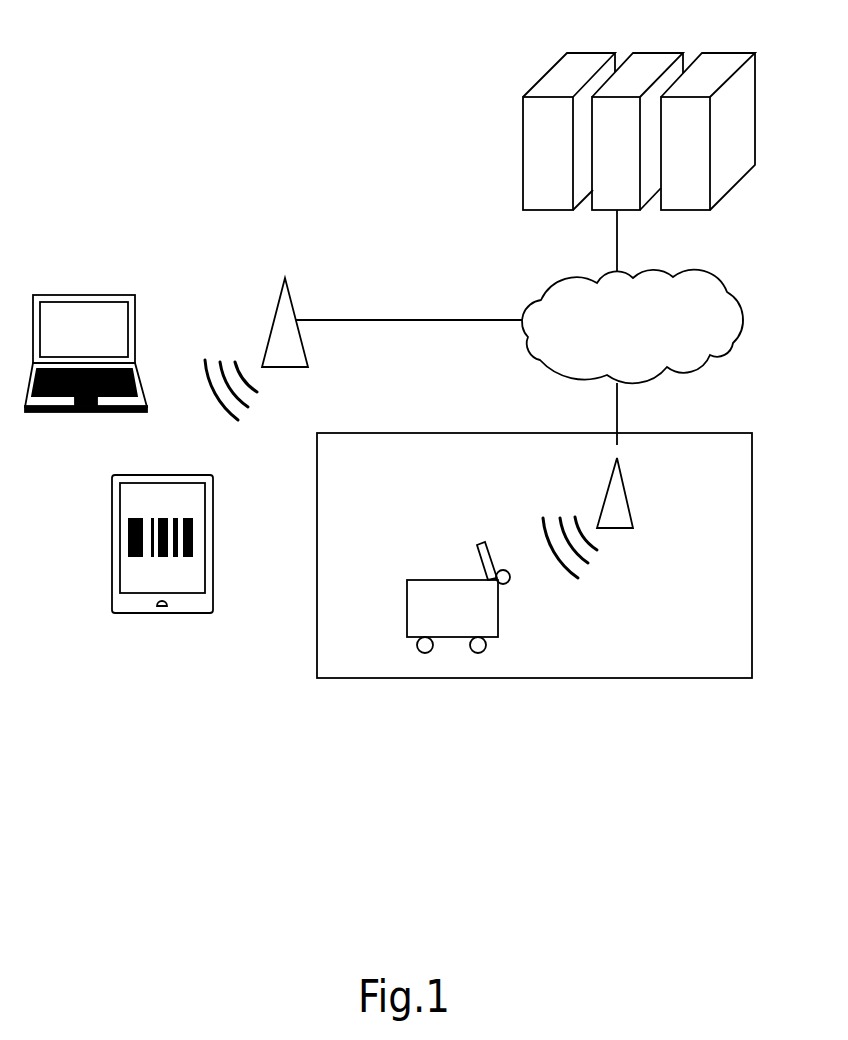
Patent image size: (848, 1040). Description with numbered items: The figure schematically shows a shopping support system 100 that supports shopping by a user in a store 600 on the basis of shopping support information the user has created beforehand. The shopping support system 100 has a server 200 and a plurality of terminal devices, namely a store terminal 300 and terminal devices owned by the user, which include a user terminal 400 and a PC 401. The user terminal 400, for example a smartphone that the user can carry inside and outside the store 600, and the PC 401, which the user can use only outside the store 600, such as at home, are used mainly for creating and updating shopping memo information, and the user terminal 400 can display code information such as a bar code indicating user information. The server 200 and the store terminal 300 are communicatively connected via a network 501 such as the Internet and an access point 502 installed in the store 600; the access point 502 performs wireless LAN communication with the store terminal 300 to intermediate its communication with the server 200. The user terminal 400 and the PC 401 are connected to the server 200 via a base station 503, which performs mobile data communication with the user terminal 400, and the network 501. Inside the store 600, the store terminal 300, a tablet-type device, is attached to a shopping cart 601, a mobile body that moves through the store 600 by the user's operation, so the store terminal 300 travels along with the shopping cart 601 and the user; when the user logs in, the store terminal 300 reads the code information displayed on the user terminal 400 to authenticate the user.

The shopping support system 100 is at (134, 90).
The server 200 is at (745, 53).
The store terminal 300 is at (477, 548).
The user terminal 400 is at (180, 475).
The PC 401 is at (117, 295).
The network 501 is at (732, 291).
The access point 502 is at (627, 495).
The base station 503 is at (285, 278).
The store 600 is at (735, 432).
The shopping cart 601 is at (487, 622).